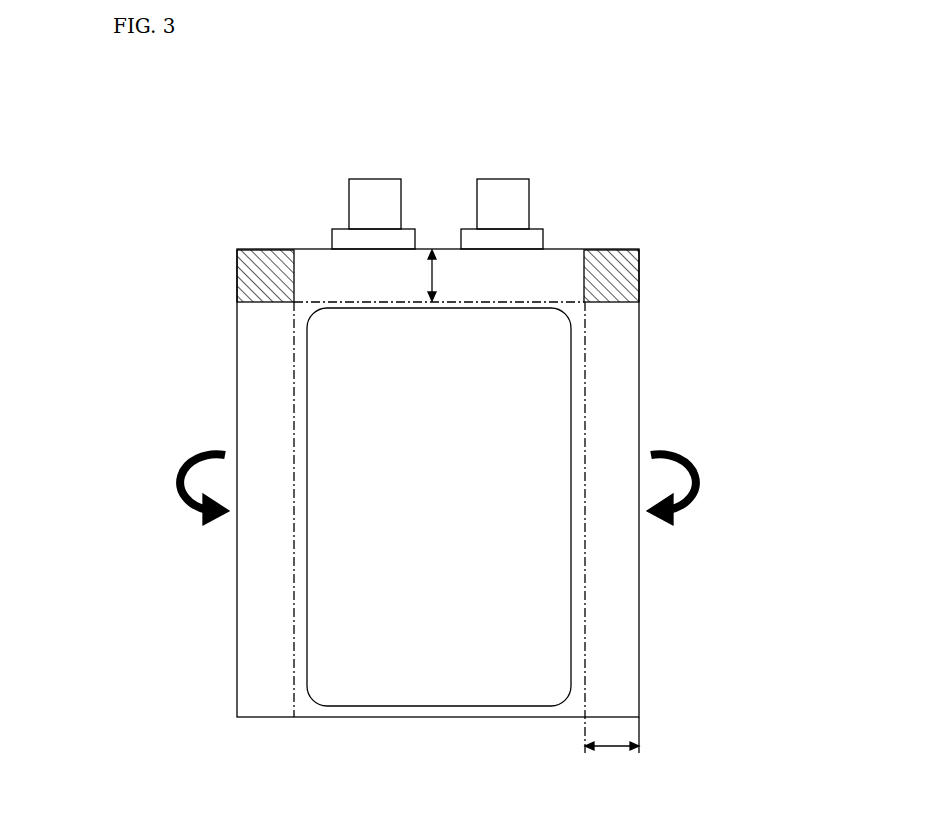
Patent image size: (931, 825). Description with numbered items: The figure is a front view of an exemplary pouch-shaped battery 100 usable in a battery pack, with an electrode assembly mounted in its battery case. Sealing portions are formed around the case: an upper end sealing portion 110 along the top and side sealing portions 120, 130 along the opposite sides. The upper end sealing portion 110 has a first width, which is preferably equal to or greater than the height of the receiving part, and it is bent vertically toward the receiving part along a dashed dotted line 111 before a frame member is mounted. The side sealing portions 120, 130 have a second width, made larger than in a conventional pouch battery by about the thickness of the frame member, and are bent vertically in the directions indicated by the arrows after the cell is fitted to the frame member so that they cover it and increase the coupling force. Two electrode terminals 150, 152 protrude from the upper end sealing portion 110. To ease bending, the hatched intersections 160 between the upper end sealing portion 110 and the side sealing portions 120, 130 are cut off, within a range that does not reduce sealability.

The pouch-shaped battery 100 is at (294, 177).
The upper end sealing portion 110 is at (320, 258).
The sealing line 111 is at (546, 300).
The side sealing portion 120 is at (258, 390).
The side sealing portion 130 is at (622, 403).
The electrode terminal 150 is at (385, 179).
The electrode terminal 152 is at (507, 179).
The intersections 160 is at (237, 270).